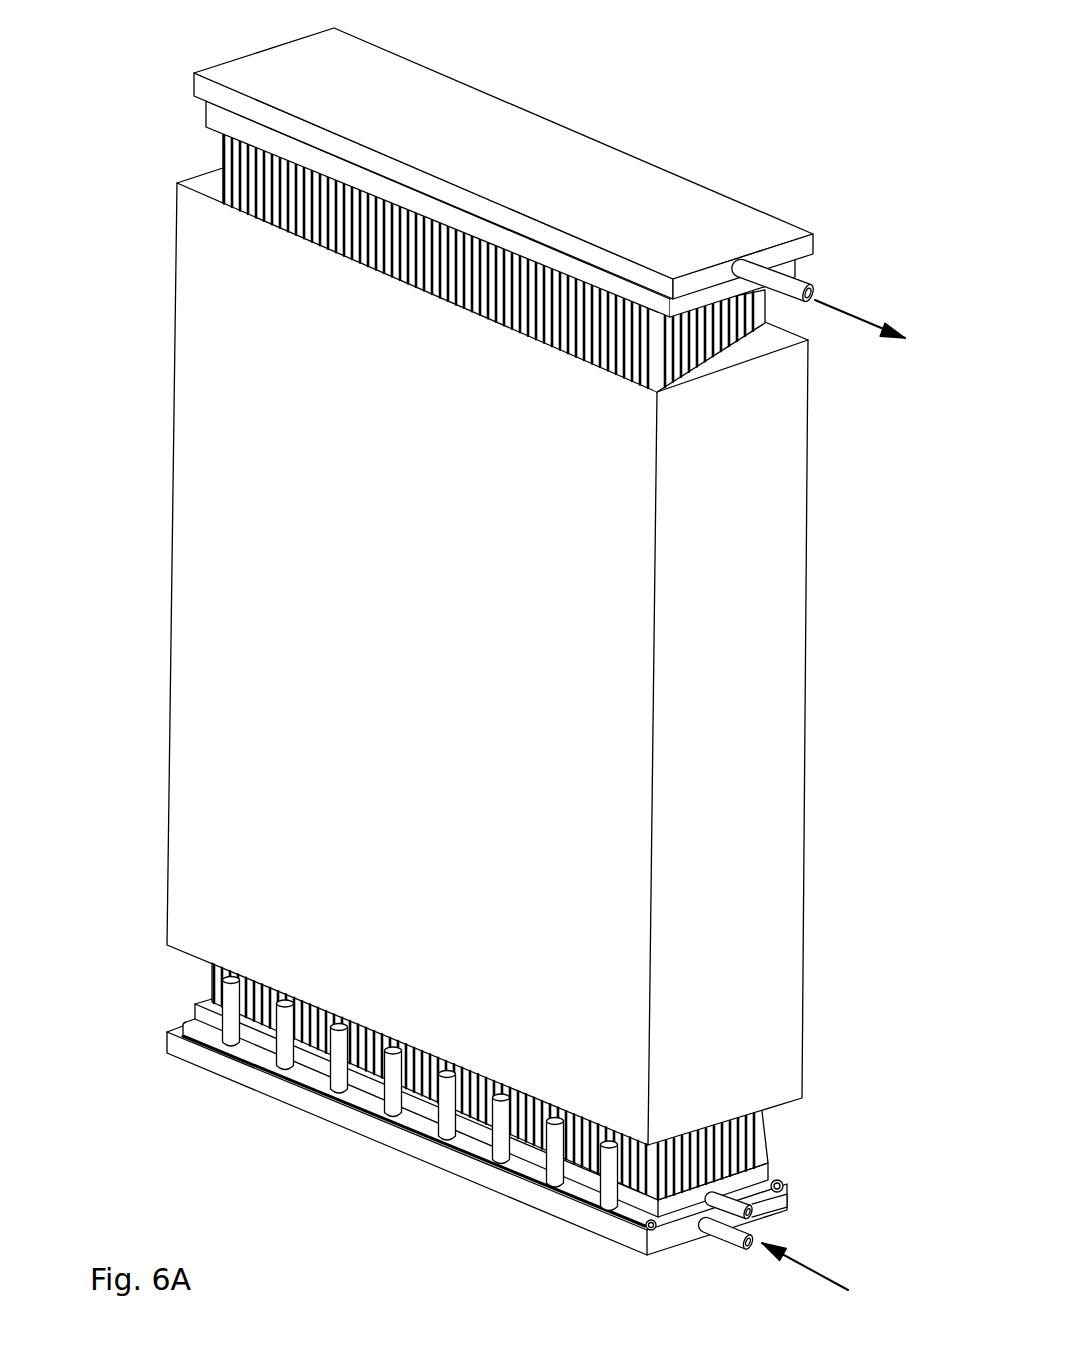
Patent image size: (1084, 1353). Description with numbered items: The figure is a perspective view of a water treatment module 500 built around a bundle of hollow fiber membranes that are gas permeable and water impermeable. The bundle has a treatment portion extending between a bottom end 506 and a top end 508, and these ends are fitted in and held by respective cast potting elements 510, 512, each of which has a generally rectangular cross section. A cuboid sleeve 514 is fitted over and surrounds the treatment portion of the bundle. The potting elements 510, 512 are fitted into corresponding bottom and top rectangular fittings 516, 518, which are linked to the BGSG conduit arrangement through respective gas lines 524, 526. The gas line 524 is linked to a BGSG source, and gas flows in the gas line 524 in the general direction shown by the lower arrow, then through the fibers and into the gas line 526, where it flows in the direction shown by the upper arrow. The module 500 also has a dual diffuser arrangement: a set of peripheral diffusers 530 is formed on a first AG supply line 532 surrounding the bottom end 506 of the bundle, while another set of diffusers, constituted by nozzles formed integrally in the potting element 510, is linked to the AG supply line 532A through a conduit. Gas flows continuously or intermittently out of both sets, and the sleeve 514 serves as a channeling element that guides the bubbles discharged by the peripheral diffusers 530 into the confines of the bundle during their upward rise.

The module 500 is at (500, 649).
The bottom end 506 is at (670, 1170).
The top end 508 is at (243, 168).
The potting element 510 is at (195, 1005).
The potting element 512 is at (217, 113).
The cuboid sleeve 514 is at (420, 673).
The bottom rectangular fitting 516 is at (235, 1072).
The top rectangular fitting 518 is at (277, 68).
The gas line 524 is at (733, 1234).
The gas line 526 is at (808, 288).
The peripheral diffusers 530 is at (338, 1066).
The first AG supply line 532 is at (420, 1127).
The AG supply line 532A is at (762, 1215).